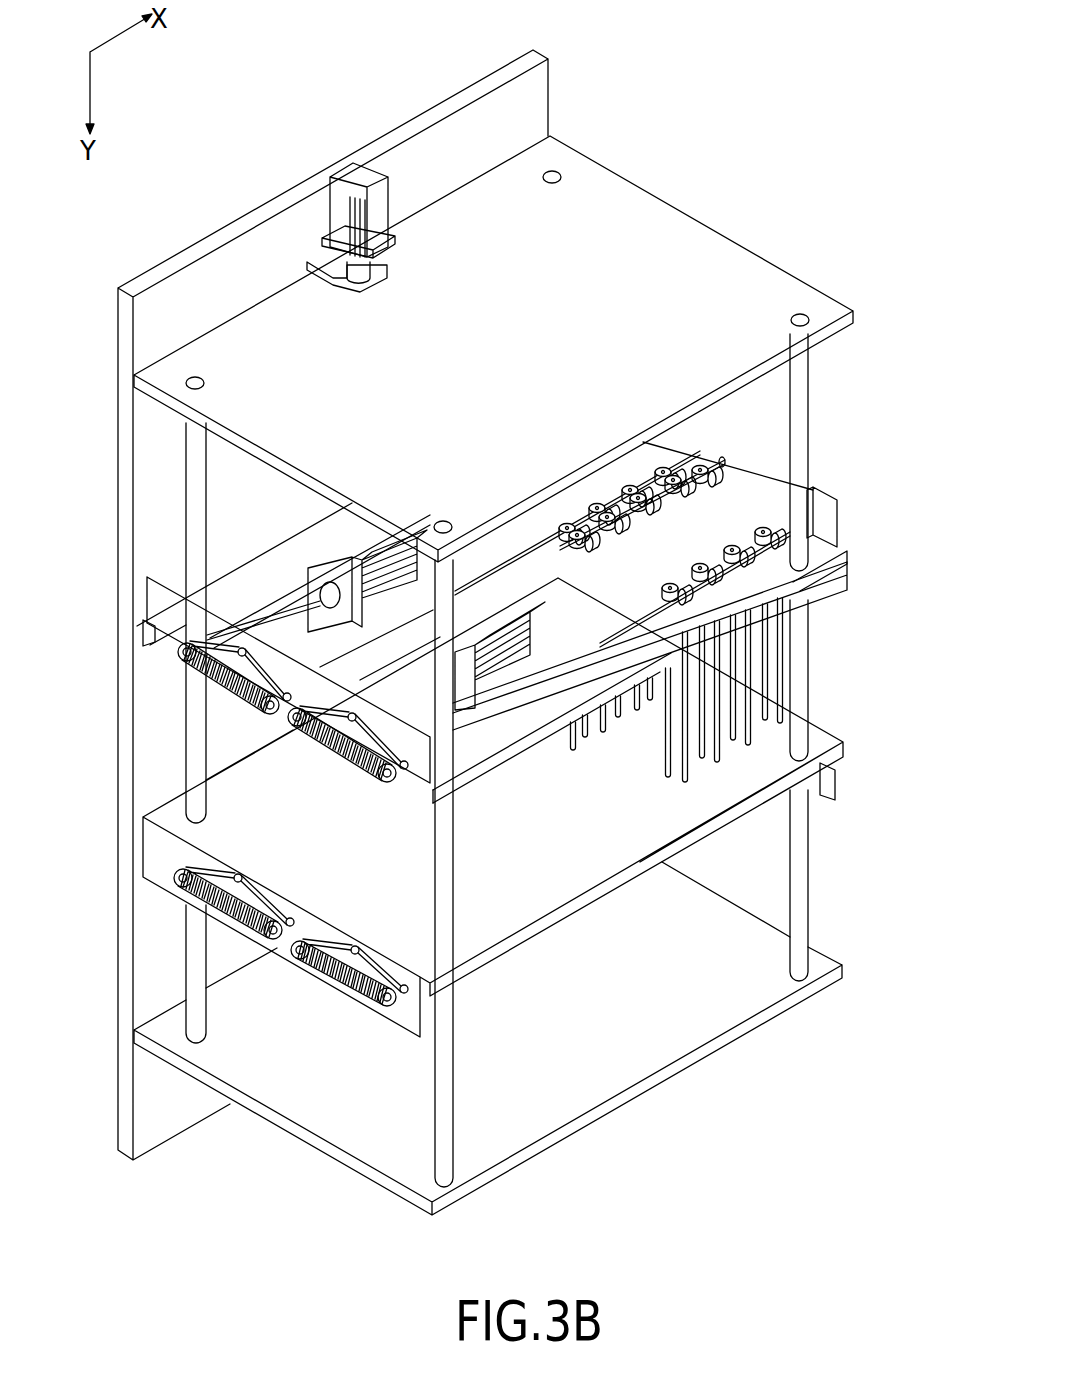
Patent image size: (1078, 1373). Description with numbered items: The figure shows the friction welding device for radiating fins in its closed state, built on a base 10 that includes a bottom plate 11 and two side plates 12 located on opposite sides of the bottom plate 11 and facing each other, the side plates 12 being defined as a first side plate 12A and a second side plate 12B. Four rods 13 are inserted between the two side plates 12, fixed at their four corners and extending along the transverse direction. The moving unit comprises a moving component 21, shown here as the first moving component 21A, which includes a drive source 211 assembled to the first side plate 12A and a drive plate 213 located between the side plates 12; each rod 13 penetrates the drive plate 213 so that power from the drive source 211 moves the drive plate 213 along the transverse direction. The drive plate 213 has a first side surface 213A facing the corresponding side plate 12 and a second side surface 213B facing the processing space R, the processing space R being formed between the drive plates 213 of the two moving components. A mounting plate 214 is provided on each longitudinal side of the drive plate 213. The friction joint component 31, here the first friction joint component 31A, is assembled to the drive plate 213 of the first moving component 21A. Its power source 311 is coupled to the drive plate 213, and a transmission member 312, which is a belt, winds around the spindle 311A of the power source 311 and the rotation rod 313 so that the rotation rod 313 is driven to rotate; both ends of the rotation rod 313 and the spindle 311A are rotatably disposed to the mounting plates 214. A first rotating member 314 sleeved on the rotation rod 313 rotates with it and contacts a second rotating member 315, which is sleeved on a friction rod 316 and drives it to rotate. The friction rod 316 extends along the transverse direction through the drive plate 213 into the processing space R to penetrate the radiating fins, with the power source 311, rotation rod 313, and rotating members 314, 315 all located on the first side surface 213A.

The base 10 is at (710, 140).
The bottom plate 11 is at (494, 102).
The side plates 12 is at (510, 675).
The first side plate 12A is at (737, 265).
The second side plate 12B is at (272, 1118).
The rods 13 is at (800, 418).
The moving component 21 is at (494, 521).
The first moving component 21A is at (345, 120).
The drive source 211 is at (348, 182).
The drive plate 213 is at (837, 556).
The first side surface 213A is at (728, 513).
The second side surface 213B is at (818, 593).
The mounting plate 214 is at (828, 537).
The friction joint component 31 is at (505, 728).
The first friction joint component 31A is at (500, 730).
The power source 311 is at (518, 630).
The spindle 311A is at (288, 623).
The transmission member 312 is at (240, 662).
The rotation rod 313 is at (540, 680).
The first rotating member 314 is at (685, 603).
The second rotating member 315 is at (668, 588).
The friction rod 316 is at (670, 759).
The processing space R is at (618, 824).